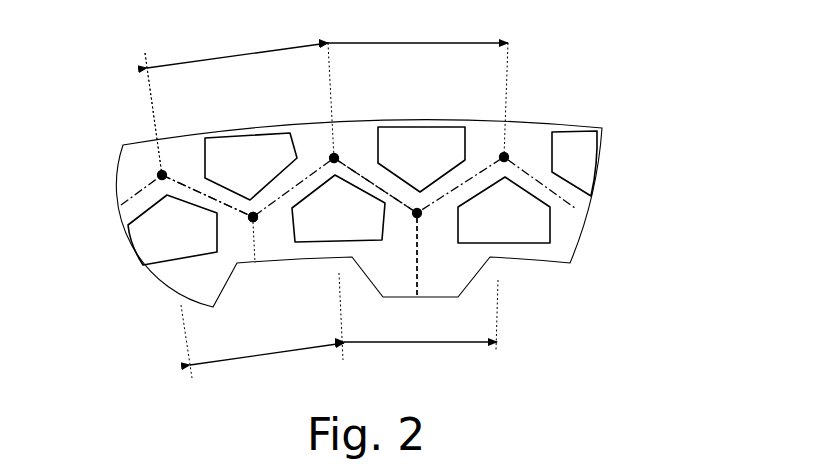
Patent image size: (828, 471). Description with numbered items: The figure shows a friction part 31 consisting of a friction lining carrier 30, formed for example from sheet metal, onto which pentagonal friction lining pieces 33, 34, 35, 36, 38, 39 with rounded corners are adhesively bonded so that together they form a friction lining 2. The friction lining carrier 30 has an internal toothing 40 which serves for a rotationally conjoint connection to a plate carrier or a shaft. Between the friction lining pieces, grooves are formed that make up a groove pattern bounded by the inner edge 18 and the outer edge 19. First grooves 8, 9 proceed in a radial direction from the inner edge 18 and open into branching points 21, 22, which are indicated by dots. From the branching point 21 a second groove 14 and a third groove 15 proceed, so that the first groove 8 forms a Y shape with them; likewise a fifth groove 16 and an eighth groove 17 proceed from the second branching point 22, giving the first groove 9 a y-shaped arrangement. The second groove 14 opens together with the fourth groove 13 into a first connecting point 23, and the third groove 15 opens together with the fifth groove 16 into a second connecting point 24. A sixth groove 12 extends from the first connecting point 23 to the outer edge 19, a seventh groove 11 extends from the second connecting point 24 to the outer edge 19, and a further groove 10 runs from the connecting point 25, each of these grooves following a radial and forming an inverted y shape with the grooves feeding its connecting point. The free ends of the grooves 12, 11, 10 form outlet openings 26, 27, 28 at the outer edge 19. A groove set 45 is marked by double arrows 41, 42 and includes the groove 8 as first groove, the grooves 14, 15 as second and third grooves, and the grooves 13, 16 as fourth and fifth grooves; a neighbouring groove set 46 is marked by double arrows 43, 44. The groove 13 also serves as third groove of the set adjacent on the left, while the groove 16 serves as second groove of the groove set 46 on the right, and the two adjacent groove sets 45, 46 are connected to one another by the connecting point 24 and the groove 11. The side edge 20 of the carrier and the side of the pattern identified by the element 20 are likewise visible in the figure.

The friction lining 2 is at (587, 151).
The first groove 8 is at (253, 228).
The first groove 9 is at (418, 272).
The groove 10 is at (507, 154).
The seventh groove 11 is at (347, 118).
The sixth groove 12 is at (160, 152).
The fourth groove 13 is at (142, 195).
The second groove 14 is at (247, 214).
The third groove 15 is at (297, 134).
The fifth groove 16 is at (402, 212).
The eighth groove 17 is at (477, 177).
The inner edge 18 is at (561, 269).
The outer edge 19 is at (605, 125).
The side edge 20 is at (121, 168).
The branching point 21 is at (256, 222).
The second branching point 22 is at (420, 220).
The first connecting point 23 is at (158, 173).
The second connecting point 24 is at (363, 166).
The connecting point 25 is at (508, 133).
The outlet opening 26 is at (154, 136).
The outlet opening 27 is at (330, 107).
The outlet opening 28 is at (510, 116).
The friction lining carrier 30 is at (570, 208).
The friction part 31 is at (145, 281).
The friction lining piece 33 is at (147, 242).
The friction lining piece 34 is at (324, 238).
The friction lining piece 35 is at (437, 150).
The friction lining piece 36 is at (247, 150).
The friction lining piece 38 is at (560, 236).
The friction lining piece 39 is at (587, 170).
The internal toothing 40 is at (478, 270).
The double arrow 41 is at (208, 58).
The double arrow 42 is at (260, 357).
The double arrow 43 is at (468, 43).
The double arrow 44 is at (435, 343).
The groove set 45 is at (203, 203).
The groove set 46 is at (378, 125).